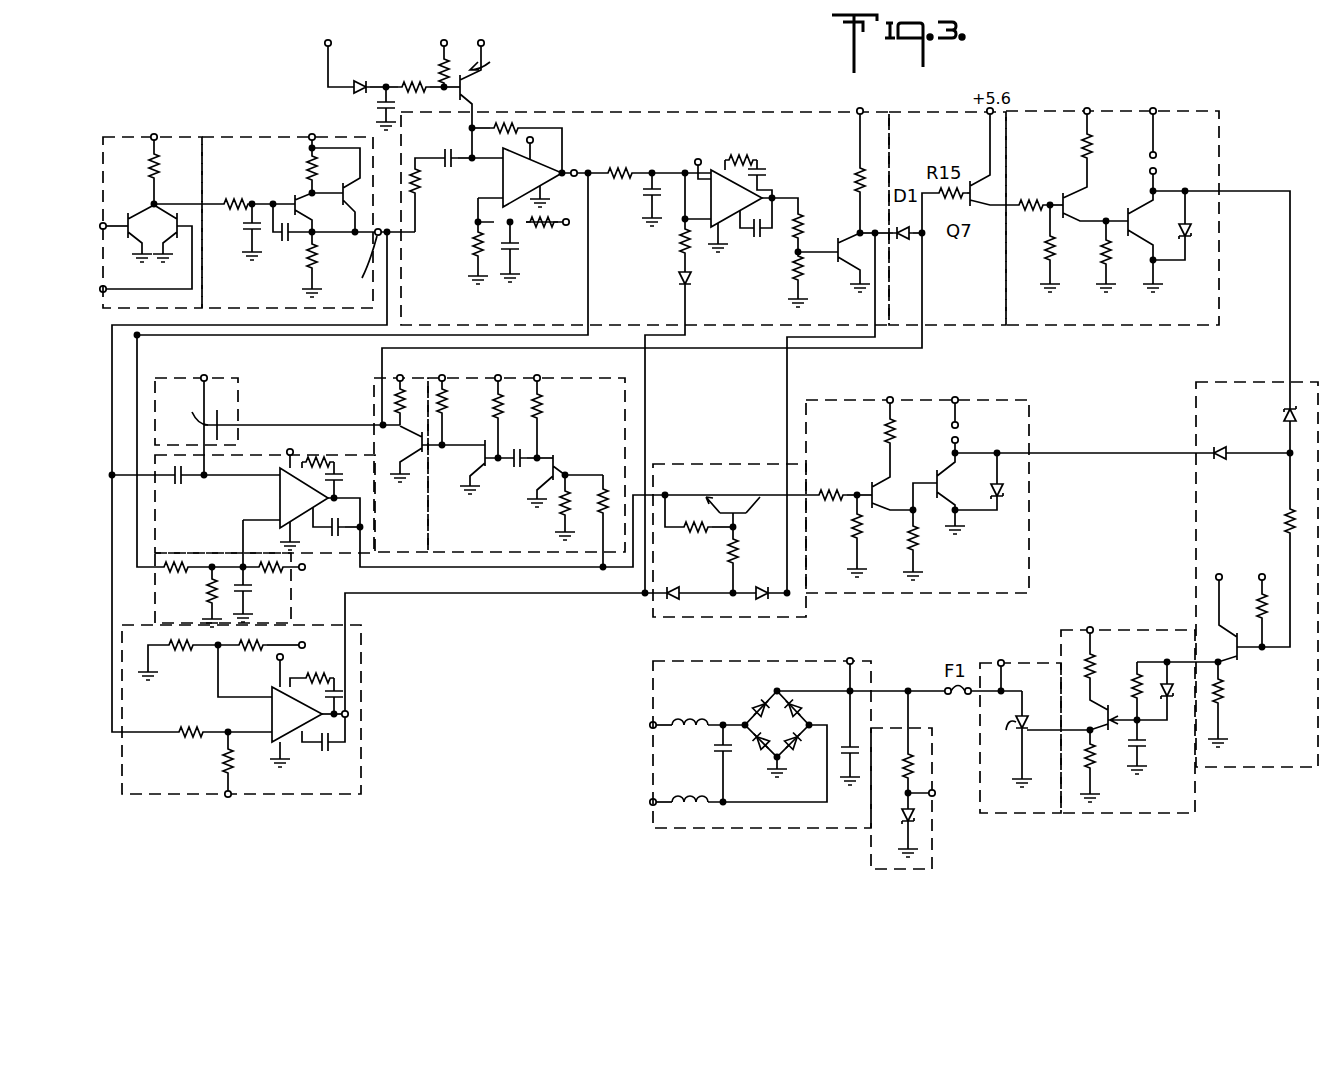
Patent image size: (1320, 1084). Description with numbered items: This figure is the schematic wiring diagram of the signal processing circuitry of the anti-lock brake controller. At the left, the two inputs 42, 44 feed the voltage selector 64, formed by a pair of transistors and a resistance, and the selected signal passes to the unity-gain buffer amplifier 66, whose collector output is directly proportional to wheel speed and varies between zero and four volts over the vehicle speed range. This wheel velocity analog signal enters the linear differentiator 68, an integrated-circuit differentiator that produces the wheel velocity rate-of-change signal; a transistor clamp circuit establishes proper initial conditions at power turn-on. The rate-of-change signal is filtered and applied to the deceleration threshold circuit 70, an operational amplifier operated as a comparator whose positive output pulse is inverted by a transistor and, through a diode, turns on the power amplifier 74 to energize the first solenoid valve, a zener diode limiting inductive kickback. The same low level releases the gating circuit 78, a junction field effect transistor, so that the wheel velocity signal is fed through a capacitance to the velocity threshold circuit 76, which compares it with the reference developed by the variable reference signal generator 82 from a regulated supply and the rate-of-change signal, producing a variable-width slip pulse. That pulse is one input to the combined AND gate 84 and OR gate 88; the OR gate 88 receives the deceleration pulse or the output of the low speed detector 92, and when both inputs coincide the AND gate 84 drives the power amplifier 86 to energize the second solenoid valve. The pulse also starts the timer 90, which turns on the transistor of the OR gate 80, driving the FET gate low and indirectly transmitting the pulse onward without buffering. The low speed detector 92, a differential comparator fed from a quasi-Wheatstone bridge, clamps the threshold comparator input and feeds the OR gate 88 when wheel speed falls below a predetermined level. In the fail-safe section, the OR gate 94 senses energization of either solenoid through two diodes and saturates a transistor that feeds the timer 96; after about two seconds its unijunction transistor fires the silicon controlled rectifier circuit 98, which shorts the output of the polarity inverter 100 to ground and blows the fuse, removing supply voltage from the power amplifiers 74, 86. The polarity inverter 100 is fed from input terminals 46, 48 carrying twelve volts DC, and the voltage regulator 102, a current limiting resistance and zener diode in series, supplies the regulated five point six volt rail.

The input terminal 42 is at (100, 288).
The input terminal 44 is at (100, 224).
The input terminal 46 is at (650, 724).
The input terminal 48 is at (650, 801).
The voltage selector 64 is at (125, 127).
The unity-gain buffer amplifier 66 is at (260, 130).
The linear differentiator 68 is at (607, 171).
The deceleration threshold circuit 70 is at (680, 106).
The power amplifier 74 is at (1215, 105).
The velocity threshold circuit 76 is at (347, 580).
The gating circuit 78 is at (249, 390).
The OR gate 80 is at (368, 386).
The variable reference signal generator 82 is at (304, 591).
The AND gate 84 is at (729, 511).
The power amplifier 86 is at (857, 395).
The OR gate 88 is at (714, 457).
The timer 90 is at (570, 371).
The low speed detector 92 is at (371, 674).
The OR gate 94 is at (1233, 378).
The timer 96 is at (1163, 626).
The SCR latch circuit 98 is at (1042, 658).
The polarity inverter 100 is at (767, 658).
The voltage regulator 102 is at (864, 852).